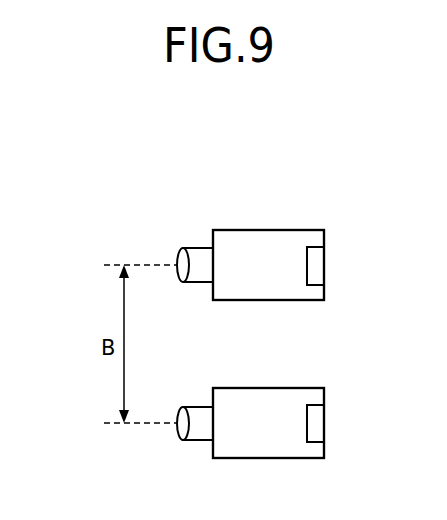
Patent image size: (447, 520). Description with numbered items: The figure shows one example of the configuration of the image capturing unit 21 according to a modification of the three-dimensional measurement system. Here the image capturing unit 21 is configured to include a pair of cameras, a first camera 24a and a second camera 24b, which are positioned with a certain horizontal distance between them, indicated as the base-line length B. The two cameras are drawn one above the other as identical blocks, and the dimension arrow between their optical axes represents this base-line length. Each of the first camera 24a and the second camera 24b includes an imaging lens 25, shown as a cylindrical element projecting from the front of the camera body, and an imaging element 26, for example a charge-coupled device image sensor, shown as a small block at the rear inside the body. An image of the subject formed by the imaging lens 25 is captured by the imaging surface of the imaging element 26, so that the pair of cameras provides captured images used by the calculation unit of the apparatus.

The image capturing unit 21 is at (262, 181).
The first camera 24a is at (236, 230).
The second camera 24b is at (235, 388).
The imaging lens 25 is at (182, 247).
The imaging element 26 is at (318, 247).